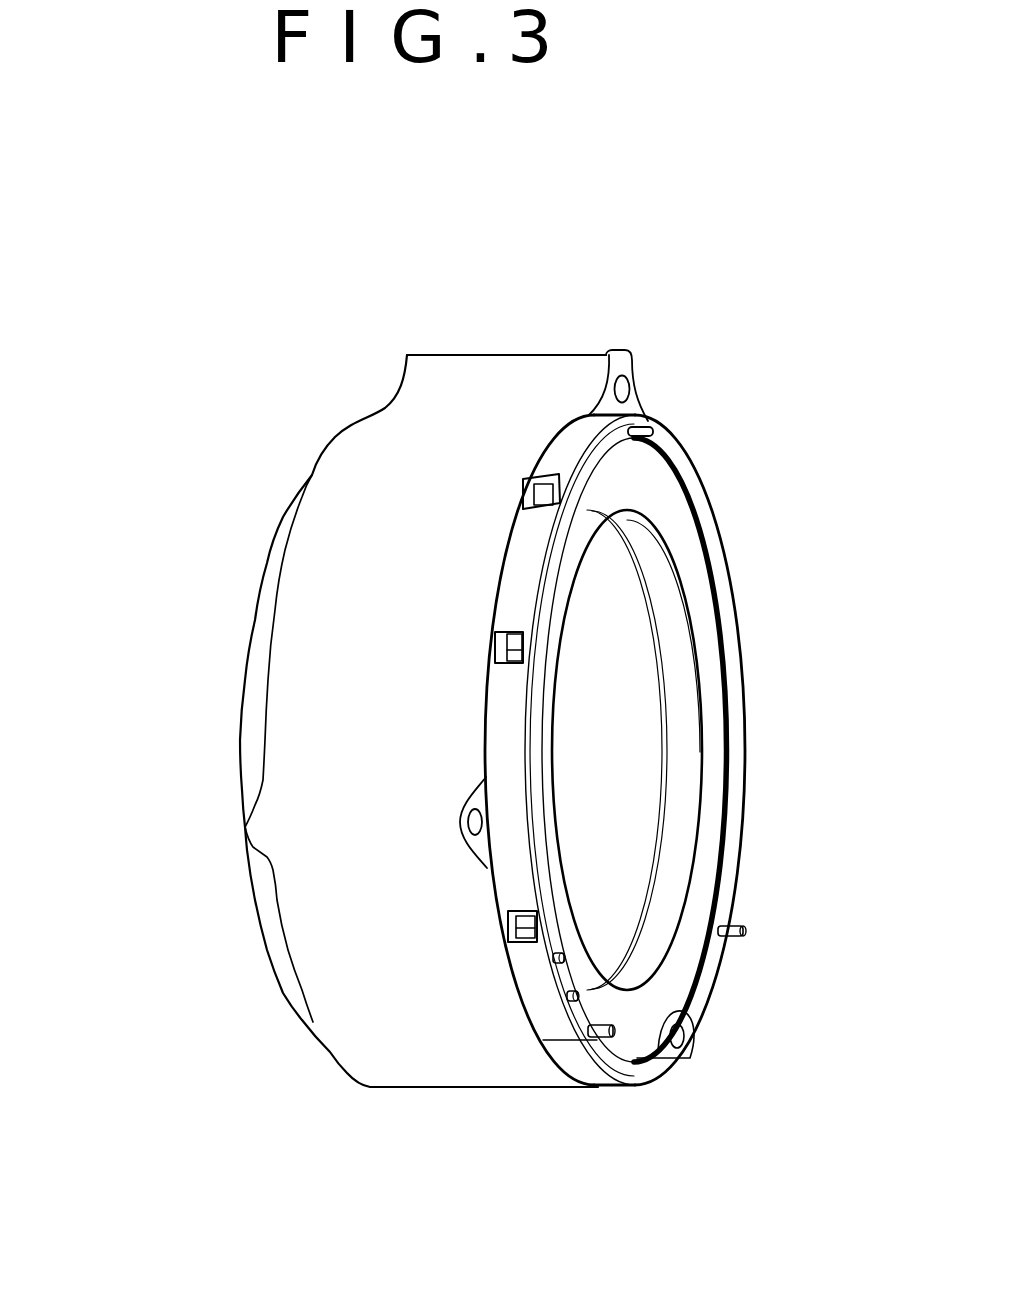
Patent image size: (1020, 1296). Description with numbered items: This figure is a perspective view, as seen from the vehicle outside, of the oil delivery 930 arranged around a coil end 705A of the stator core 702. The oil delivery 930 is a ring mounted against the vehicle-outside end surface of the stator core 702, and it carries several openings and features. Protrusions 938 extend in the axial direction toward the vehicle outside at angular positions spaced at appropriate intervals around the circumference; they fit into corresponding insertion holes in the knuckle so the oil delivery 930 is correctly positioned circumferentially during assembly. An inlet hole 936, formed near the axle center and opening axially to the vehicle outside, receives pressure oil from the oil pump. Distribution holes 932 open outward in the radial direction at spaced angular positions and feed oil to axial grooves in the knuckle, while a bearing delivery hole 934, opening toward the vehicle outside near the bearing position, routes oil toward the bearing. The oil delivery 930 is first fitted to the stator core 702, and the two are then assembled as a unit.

The stator core 702 is at (374, 478).
The oil delivery 930 is at (717, 487).
The distribution holes 932 is at (542, 492).
The bearing delivery hole 934 is at (553, 958).
The inlet hole 936 is at (572, 1000).
The protrusions 938 is at (645, 428).
The coil end 705A is at (683, 975).